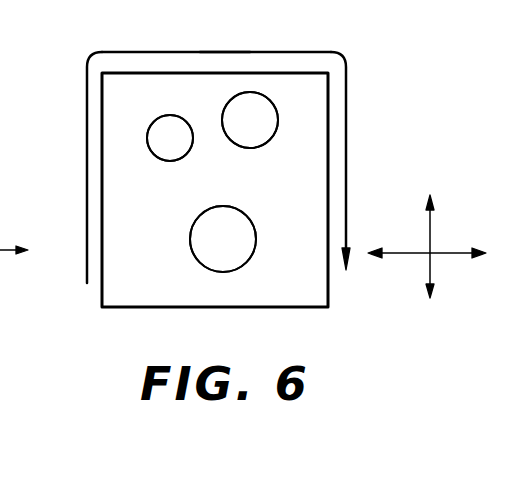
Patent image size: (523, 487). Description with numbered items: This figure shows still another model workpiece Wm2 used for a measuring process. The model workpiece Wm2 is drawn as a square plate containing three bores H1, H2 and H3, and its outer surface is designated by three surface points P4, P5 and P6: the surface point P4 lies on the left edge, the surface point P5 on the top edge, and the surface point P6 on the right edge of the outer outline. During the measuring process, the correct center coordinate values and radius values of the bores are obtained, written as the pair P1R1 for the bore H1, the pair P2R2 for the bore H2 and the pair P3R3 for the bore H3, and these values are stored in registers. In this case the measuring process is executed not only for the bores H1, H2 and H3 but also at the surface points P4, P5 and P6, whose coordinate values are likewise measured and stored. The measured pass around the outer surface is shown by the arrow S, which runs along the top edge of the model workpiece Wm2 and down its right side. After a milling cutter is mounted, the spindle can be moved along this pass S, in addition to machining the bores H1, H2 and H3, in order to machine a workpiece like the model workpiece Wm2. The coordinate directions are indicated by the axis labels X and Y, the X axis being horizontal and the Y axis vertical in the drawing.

The model workpiece Wm2 is at (297, 73).
The outer surface point P4 is at (87, 283).
The outer surface point P5 is at (146, 72).
The outer surface point P6 is at (330, 101).
The measured pass arrow S is at (225, 40).
The bore H1 is at (184, 157).
The bore H2 is at (270, 140).
The bore H3 is at (256, 253).
The center coordinate value and radius value of bore H1 P1R1 is at (147, 140).
The center coordinate value and radius value of bore H2 P2R2 is at (278, 119).
The center coordinate value and radius value of bore H3 P3R3 is at (218, 272).
The X axis direction X is at (252, 254).
The Y axis direction Y is at (430, 247).